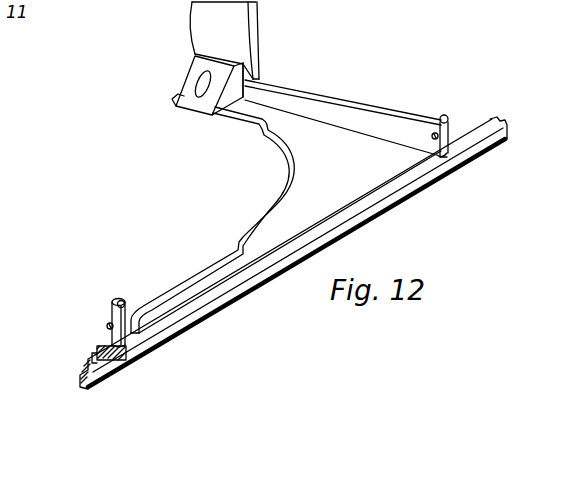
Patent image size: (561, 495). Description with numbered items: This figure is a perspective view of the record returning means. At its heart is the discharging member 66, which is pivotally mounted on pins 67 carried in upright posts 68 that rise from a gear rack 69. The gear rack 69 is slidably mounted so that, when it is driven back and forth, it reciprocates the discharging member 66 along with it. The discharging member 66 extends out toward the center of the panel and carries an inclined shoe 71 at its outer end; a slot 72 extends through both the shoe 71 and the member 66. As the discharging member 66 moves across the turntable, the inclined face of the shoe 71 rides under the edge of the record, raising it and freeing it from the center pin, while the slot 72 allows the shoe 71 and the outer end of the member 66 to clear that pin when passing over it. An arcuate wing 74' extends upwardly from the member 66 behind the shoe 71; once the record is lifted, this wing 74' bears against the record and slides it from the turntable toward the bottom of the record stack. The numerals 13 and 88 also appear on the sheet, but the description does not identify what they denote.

The discharging member 66 is at (306, 179).
The pins 67 is at (431, 138).
The upright posts 68 is at (446, 115).
The gear rack 69 is at (486, 132).
The inclined shoe 71 is at (240, 82).
The slot 72 is at (197, 72).
The arcuate wing 74' is at (245, 40).
The element 13 is at (402, 0).
The element 88 is at (159, 5).